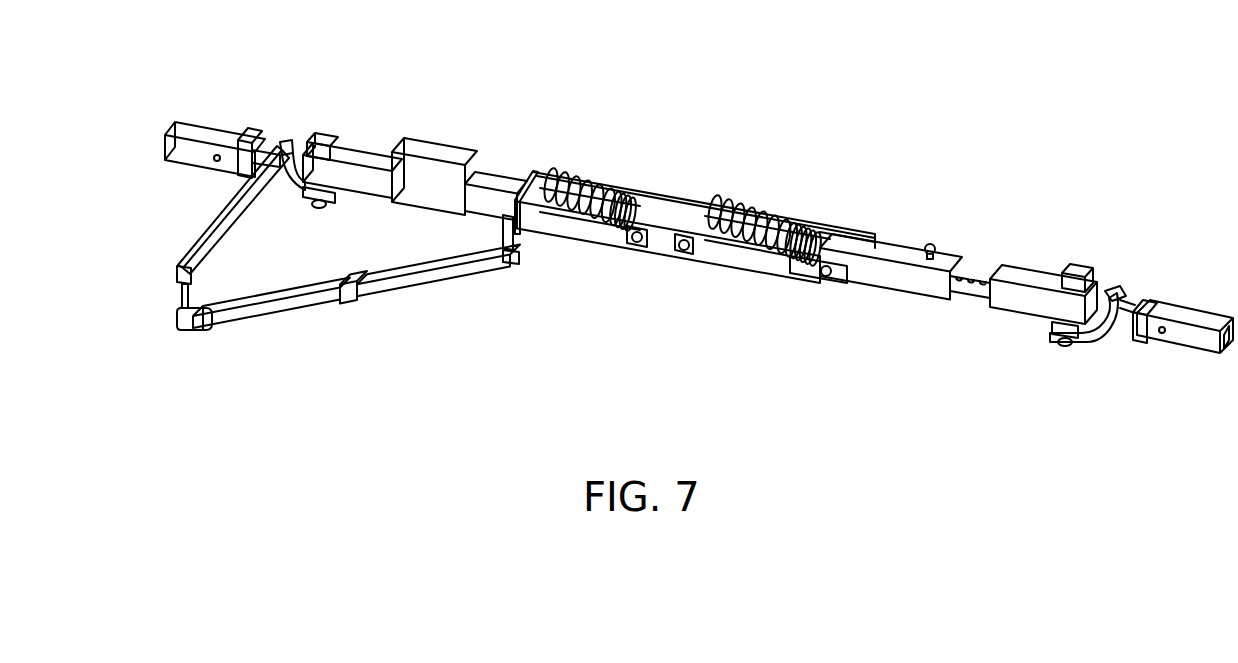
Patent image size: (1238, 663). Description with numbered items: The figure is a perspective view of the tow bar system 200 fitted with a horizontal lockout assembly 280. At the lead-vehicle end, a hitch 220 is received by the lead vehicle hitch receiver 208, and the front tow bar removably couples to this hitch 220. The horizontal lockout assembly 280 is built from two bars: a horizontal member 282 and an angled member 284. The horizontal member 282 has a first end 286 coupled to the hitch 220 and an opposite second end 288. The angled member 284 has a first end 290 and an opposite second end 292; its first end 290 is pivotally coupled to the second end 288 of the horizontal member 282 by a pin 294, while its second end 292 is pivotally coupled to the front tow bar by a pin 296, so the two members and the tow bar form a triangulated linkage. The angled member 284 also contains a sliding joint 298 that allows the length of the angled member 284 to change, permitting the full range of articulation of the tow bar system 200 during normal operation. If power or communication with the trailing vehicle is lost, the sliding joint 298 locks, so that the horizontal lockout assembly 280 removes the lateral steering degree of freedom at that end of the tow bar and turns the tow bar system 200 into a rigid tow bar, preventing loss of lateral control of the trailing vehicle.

The tow bar system 200 is at (1090, 110).
The lead vehicle hitch receiver 208 is at (208, 124).
The hitch 220 is at (274, 143).
The horizontal lockout assembly 280 is at (309, 363).
The horizontal member 282 is at (218, 221).
The angled member 284 is at (375, 284).
The first end 286 is at (346, 305).
The second end 288 is at (160, 272).
The first end 290 is at (190, 343).
The second end 292 is at (512, 276).
The pin 294 is at (180, 298).
The pin 296 is at (519, 236).
The sliding joint 298 is at (268, 311).